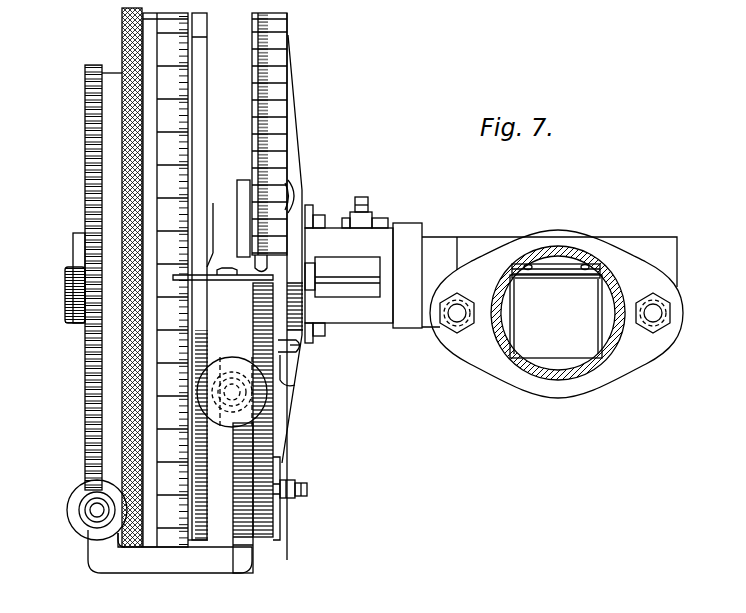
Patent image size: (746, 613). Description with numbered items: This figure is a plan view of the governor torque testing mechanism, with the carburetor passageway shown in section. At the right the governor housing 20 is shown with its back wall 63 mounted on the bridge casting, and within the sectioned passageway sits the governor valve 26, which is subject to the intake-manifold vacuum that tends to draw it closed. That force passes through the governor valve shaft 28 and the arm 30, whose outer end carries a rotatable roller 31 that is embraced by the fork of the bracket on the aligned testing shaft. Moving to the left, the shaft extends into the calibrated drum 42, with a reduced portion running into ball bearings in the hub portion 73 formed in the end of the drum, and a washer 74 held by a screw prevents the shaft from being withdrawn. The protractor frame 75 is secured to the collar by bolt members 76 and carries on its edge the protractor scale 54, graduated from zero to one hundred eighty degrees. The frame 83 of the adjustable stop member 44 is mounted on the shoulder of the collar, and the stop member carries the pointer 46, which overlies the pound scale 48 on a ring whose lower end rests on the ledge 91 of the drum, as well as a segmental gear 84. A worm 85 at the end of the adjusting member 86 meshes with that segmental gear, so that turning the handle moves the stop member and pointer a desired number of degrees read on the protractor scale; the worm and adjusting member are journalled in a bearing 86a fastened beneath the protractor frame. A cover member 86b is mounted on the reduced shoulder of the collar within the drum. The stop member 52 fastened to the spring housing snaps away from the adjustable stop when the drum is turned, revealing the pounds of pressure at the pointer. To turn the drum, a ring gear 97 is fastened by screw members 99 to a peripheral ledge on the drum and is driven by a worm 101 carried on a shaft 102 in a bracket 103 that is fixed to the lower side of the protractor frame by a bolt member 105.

The governor housing 20 is at (490, 358).
The governor valve 26 is at (560, 345).
The governor valve shaft 28 is at (548, 265).
The arm 30 is at (388, 219).
The rotatable roller 31 is at (370, 212).
The calibrated drum 42 is at (175, 547).
The adjustable stop member 44 is at (230, 285).
The pointer 46 is at (306, 303).
The pound scale 48 is at (186, 540).
The stop member 52 is at (272, 268).
The protractor scale 54 is at (300, 122).
The back wall 63 is at (407, 320).
The hub portion 73 is at (75, 240).
The washer 74 is at (65, 278).
The protractor frame 75 is at (284, 417).
The bolt members 76 is at (300, 184).
The frame 83 is at (243, 180).
The segmental gear 84 is at (300, 345).
The worm 85 is at (267, 393).
The adjusting member 86 is at (262, 422).
The bearing 86a is at (280, 463).
The cover member 86b is at (255, 551).
The ledge 91 is at (133, 612).
The ring gear 97 is at (88, 412).
The screw members 99 is at (85, 110).
The worm 101 is at (67, 511).
The shaft 102 is at (95, 511).
The bracket 103 is at (101, 560).
The bolt member 105 is at (315, 490).